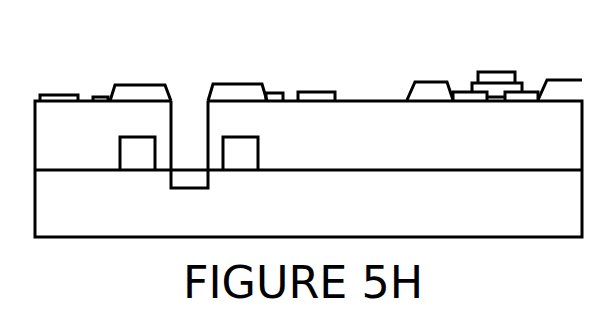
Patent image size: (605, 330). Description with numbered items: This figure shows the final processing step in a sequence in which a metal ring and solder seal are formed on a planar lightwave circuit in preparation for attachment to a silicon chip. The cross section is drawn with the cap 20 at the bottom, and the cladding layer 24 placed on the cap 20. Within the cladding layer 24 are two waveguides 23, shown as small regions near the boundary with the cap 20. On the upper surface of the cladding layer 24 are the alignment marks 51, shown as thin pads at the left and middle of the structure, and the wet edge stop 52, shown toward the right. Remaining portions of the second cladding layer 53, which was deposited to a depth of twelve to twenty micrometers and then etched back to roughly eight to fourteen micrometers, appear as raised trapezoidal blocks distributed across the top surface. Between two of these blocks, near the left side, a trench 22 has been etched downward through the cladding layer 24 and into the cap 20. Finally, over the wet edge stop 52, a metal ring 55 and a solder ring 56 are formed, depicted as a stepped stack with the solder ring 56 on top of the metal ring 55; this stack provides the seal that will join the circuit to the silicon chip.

The cap 20 is at (508, 223).
The trench 22 is at (203, 158).
The waveguides 23 is at (135, 171).
The cladding layer 24 is at (440, 155).
The alignment marks 51 is at (98, 106).
The wet edge stop 52 is at (488, 98).
The second cladding layer 53 is at (240, 82).
The metal ring 55 is at (477, 85).
The solder ring 56 is at (503, 72).